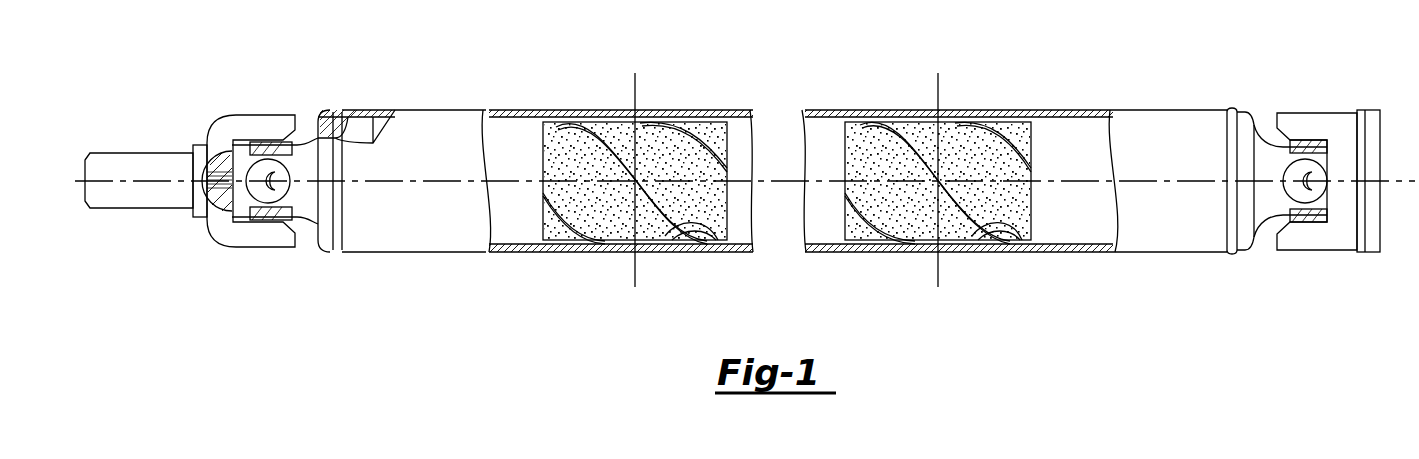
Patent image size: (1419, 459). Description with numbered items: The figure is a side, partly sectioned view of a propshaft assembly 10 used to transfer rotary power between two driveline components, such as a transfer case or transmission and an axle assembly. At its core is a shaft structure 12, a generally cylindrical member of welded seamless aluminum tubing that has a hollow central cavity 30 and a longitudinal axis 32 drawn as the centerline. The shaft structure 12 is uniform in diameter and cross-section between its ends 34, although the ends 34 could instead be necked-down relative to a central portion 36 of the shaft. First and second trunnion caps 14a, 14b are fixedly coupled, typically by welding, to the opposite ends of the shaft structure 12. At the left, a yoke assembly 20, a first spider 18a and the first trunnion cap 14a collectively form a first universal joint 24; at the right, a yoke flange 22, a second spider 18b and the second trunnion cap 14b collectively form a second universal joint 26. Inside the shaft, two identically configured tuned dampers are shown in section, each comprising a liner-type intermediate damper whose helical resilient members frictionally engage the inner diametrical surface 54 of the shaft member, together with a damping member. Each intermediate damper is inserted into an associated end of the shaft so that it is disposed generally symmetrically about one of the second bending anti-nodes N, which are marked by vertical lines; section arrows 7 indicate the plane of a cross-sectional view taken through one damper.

The propshaft assembly 10 is at (995, 58).
The shaft structure 12 is at (547, 256).
The first trunnion cap 14a is at (312, 122).
The second trunnion cap 14b is at (1241, 116).
The first spider 18a is at (271, 222).
The second spider 18b is at (1297, 144).
The yoke assembly 20 is at (120, 152).
The yoke flange 22 is at (1312, 246).
The first universal joint 24 is at (236, 112).
The second universal joint 26 is at (1257, 257).
The hollow central cavity 30 is at (378, 130).
The longitudinal axis 32 is at (387, 181).
The ends 34 is at (1153, 122).
The central portion 36 is at (842, 110).
The inner diametrical surface 54 is at (530, 128).
The section line 7- 7 is at (1018, 70).
The second bending anti-node N is at (633, 95).